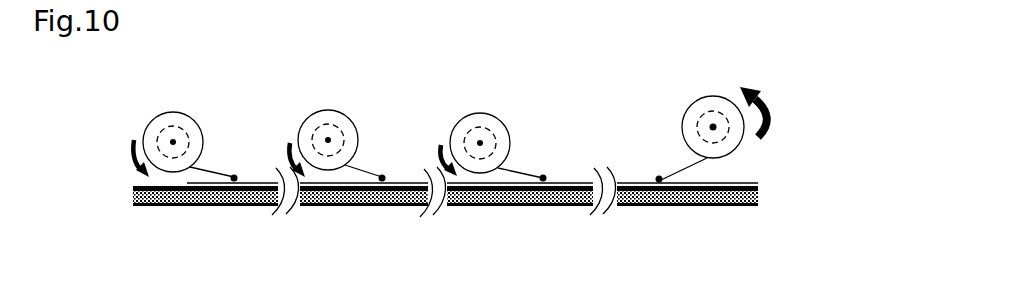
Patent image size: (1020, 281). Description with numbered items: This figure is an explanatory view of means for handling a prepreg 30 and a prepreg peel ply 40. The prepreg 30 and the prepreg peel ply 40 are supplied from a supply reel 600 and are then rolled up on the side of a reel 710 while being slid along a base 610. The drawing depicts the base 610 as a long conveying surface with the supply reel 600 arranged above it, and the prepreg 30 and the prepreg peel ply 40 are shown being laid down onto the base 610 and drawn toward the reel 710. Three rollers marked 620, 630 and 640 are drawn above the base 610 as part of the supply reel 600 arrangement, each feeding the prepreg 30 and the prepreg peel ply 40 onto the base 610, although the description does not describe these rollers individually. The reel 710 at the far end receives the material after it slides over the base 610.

The supply reel 600 is at (440, 95).
The base 610 is at (202, 204).
The first supply roller 620 is at (190, 135).
The second supply roller 630 is at (335, 120).
The third supply roller 640 is at (457, 135).
The reel 710 is at (695, 115).
The prepreg 30 is at (472, 163).
The prepreg peel ply 40 is at (212, 172).